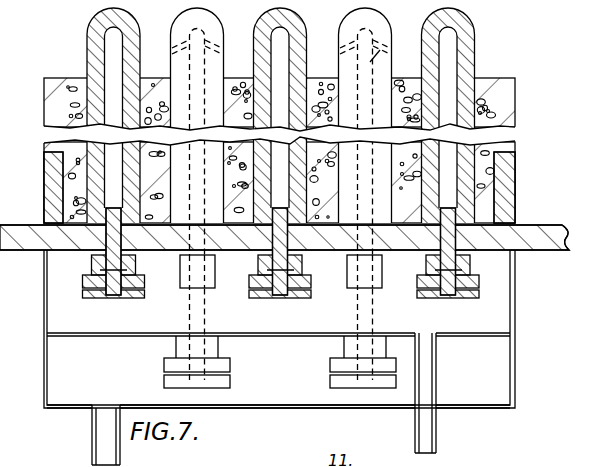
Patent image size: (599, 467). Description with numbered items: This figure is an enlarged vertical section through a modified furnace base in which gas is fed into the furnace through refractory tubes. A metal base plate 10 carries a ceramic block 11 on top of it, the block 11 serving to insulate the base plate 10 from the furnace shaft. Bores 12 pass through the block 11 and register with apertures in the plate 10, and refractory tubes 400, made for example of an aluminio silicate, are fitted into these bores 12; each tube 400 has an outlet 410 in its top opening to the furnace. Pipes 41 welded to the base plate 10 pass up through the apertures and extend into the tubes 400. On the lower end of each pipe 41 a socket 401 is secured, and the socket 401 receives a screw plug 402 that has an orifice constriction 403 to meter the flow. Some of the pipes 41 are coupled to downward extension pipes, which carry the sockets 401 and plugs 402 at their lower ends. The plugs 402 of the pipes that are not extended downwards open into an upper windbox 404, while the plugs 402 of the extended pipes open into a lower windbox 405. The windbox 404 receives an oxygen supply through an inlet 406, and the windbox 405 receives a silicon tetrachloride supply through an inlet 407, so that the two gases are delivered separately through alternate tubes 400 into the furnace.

The metal base plate 10 is at (547, 213).
The ceramic block 11 is at (500, 101).
The bore 12 is at (443, 62).
The pipe 41 is at (105, 245).
The refractory tube 400 is at (96, 104).
The socket 401 is at (100, 258).
The screw plug 402 is at (83, 300).
The orifice constriction 403 is at (112, 299).
The windbox 404 is at (297, 318).
The windbox 405 is at (299, 376).
The inlet 406 is at (430, 430).
The inlet 407 is at (92, 438).
The outlet 410 is at (96, 50).